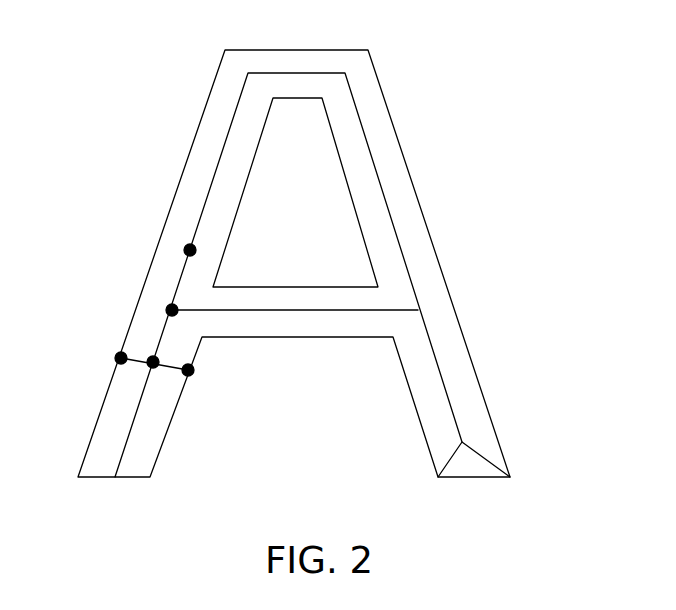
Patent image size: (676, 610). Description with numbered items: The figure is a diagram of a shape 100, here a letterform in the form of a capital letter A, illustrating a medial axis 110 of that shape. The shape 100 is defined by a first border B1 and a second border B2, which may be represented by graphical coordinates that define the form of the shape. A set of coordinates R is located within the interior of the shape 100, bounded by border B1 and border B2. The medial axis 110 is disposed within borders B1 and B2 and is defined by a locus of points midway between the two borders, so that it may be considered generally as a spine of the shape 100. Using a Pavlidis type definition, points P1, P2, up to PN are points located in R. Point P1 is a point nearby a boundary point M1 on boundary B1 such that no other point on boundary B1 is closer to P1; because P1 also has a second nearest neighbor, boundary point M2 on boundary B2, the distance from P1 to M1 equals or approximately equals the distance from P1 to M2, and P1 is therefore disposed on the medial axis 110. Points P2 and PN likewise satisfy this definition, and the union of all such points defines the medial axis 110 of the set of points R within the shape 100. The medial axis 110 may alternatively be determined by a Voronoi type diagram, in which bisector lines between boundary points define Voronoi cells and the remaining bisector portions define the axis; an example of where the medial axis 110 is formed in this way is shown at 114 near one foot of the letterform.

The shape 100 is at (577, 137).
The first border B1 is at (390, 108).
The second border B2 is at (336, 145).
The set of coordinates R is at (390, 167).
The medial axis 110 is at (403, 252).
The example of medial axis formed using a Voronoi type diagram 114 is at (484, 451).
The point PN is at (190, 250).
The point P2 is at (172, 310).
The boundary point M1 is at (122, 358).
The point P1 is at (153, 362).
The boundary point M2 is at (188, 370).